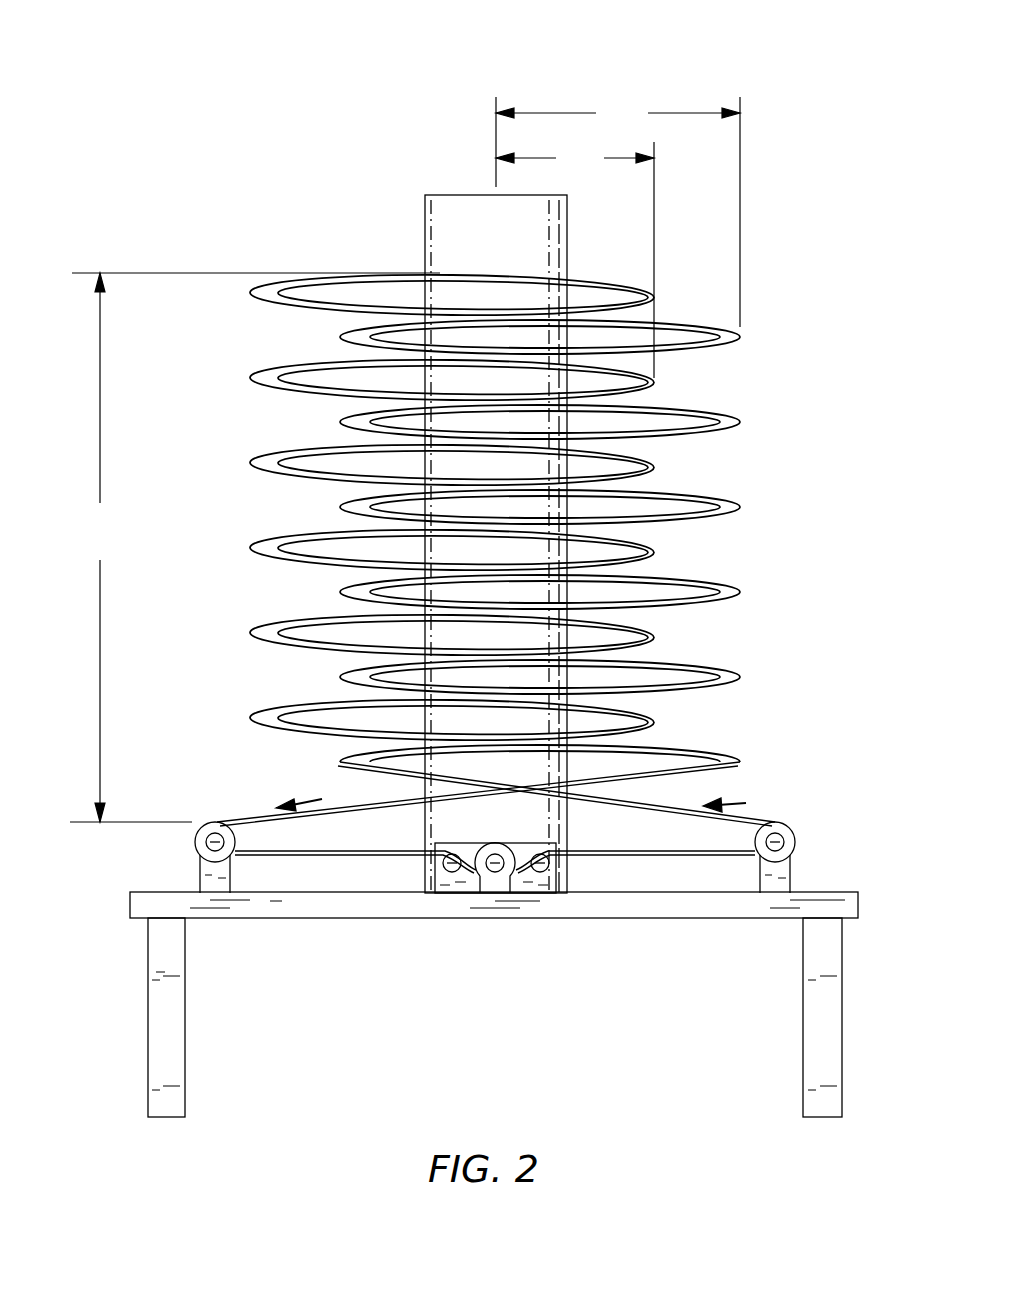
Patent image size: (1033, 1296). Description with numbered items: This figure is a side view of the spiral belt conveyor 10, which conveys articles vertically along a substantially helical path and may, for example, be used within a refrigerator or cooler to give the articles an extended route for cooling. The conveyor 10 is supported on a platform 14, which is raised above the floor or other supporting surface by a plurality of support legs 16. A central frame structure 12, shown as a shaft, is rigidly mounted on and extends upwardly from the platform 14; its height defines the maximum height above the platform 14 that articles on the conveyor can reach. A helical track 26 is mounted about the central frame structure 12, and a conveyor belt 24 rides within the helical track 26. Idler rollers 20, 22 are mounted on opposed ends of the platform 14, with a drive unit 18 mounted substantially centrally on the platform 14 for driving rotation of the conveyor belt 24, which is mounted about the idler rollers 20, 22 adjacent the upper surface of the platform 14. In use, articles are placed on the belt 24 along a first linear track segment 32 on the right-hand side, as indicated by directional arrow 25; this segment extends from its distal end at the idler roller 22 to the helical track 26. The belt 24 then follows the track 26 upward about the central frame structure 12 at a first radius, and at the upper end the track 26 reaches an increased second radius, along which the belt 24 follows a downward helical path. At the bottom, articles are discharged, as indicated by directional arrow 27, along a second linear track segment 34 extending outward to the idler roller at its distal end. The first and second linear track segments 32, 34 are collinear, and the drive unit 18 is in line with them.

The spiral belt conveyor 10 is at (114, 82).
The central frame structure 12 is at (446, 195).
The platform 14 is at (708, 965).
The support legs 16 is at (186, 1058).
The drive unit 18 is at (530, 878).
The idler roller 20 is at (218, 823).
The idler roller 22 is at (791, 838).
The conveyor belt 24 is at (336, 857).
The directional arrow 25 is at (745, 802).
The helical track 26 is at (644, 557).
The directional arrow 27 is at (320, 799).
The first linear track segment 32 is at (747, 819).
The second linear track segment 34 is at (252, 822).